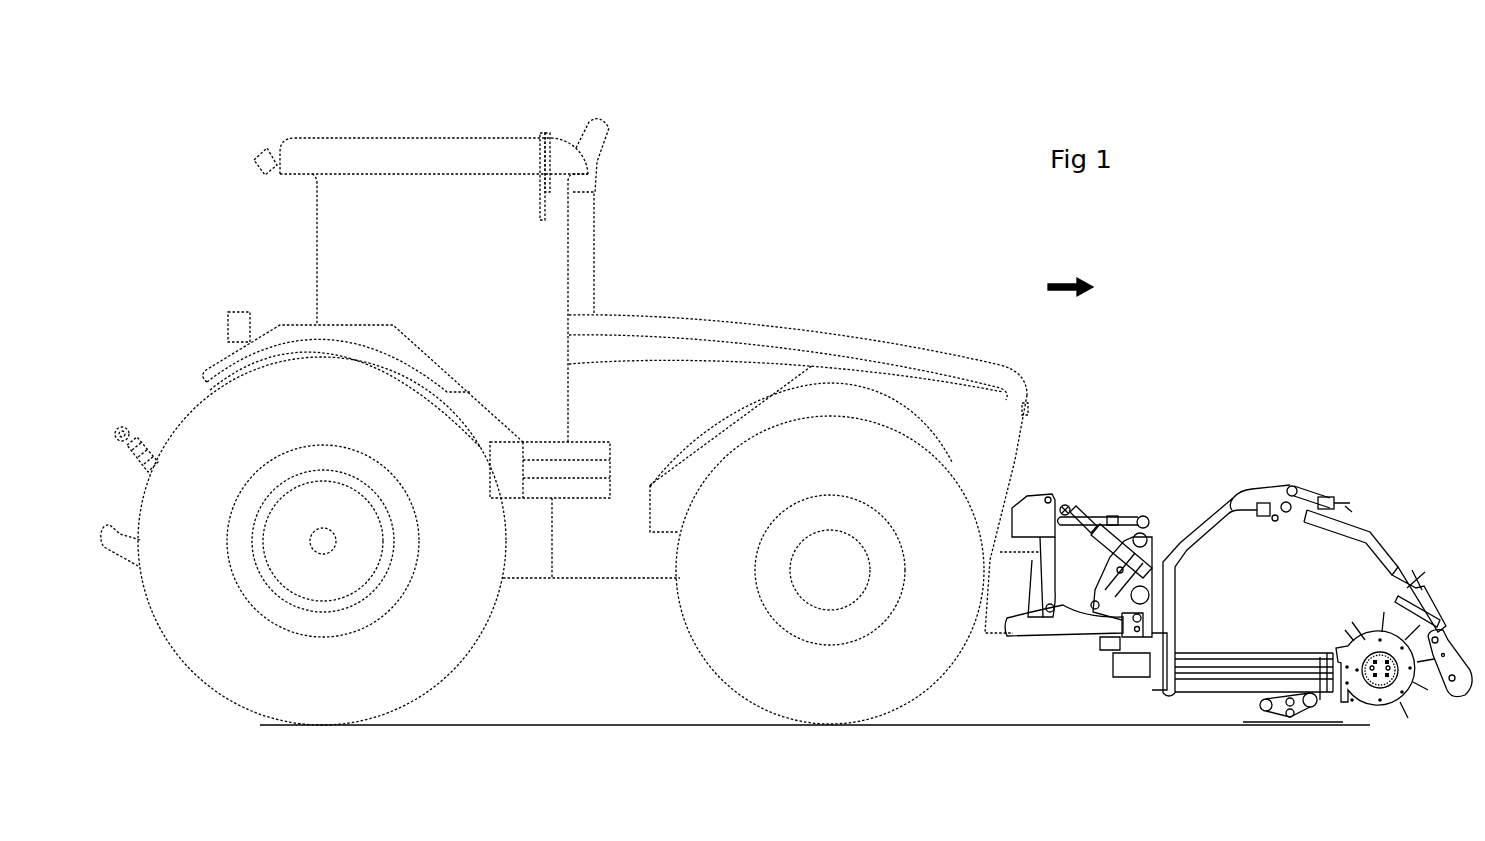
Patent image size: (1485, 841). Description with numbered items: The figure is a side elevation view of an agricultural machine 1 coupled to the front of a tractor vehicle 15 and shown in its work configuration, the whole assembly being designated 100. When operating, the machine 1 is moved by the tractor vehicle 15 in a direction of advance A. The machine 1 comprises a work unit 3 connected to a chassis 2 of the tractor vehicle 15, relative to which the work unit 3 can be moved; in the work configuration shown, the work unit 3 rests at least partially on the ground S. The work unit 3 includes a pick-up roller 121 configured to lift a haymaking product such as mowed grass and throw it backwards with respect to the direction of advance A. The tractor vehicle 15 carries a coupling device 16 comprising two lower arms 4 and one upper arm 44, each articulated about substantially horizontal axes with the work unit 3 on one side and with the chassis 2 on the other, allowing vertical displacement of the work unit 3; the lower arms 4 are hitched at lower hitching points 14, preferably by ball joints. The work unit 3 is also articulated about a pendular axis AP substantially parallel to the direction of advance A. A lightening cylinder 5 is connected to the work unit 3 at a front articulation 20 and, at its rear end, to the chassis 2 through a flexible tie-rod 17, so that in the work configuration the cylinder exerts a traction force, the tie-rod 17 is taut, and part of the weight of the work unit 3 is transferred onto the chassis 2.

The agricultural system 100 is at (1350, 215).
The tractor vehicle 15 is at (842, 302).
The agricultural machine 1 is at (1310, 384).
The work unit 3 is at (1302, 463).
The chassis 2 is at (1036, 524).
The coupling device 16 is at (1045, 478).
The lower arm 4 is at (1043, 597).
The flexible tie-rod 17 is at (1069, 508).
The upper arm 44 is at (1104, 515).
The lightening cylinder 5 is at (1120, 548).
The lower hitching point 14 is at (1148, 528).
The front articulation 20 is at (1168, 532).
The pick-up roller 121 is at (1350, 614).
The pendular axis AP is at (1135, 650).
The ground S is at (690, 722).
The direction of advance A is at (1063, 290).